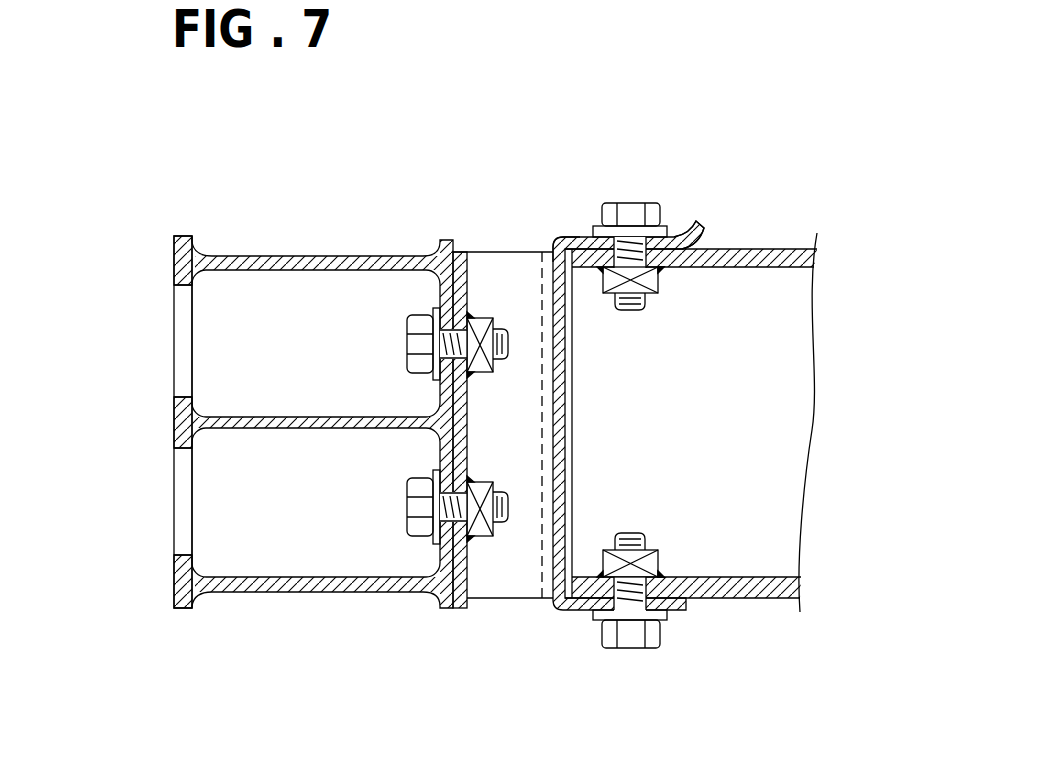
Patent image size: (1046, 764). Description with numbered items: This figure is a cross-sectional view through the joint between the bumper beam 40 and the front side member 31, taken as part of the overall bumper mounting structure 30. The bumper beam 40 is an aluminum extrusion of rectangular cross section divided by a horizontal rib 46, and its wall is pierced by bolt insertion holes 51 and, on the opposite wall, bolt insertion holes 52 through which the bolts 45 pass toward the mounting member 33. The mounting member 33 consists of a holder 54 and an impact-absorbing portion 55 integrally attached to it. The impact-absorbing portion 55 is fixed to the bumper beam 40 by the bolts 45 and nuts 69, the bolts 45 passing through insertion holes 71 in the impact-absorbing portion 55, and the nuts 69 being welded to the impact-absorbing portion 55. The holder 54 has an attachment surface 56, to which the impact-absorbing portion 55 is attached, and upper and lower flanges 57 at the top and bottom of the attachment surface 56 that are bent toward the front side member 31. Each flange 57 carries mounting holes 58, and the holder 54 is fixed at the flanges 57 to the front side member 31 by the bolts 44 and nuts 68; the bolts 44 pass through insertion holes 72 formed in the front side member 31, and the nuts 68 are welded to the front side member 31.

The mounting structure 30 is at (222, 165).
The front side member 31 is at (752, 248).
The mounting member 33 is at (763, 93).
The bumper beam 40 is at (307, 252).
The bolt 44 is at (622, 202).
The bolt 45 is at (418, 316).
The horizontal rib 46 is at (240, 418).
The bolt insertion hole 51 is at (178, 392).
The bolt insertion hole 52 is at (420, 345).
The holder 54 is at (705, 208).
The impact-absorbing portion 55 is at (556, 228).
The attachment surface 56 is at (556, 448).
The flange 57 is at (662, 268).
The mounting hole 58 is at (633, 203).
The nut 68 is at (653, 293).
The nut 69 is at (484, 330).
The insertion hole 71 is at (478, 318).
The insertion hole 72 is at (628, 312).